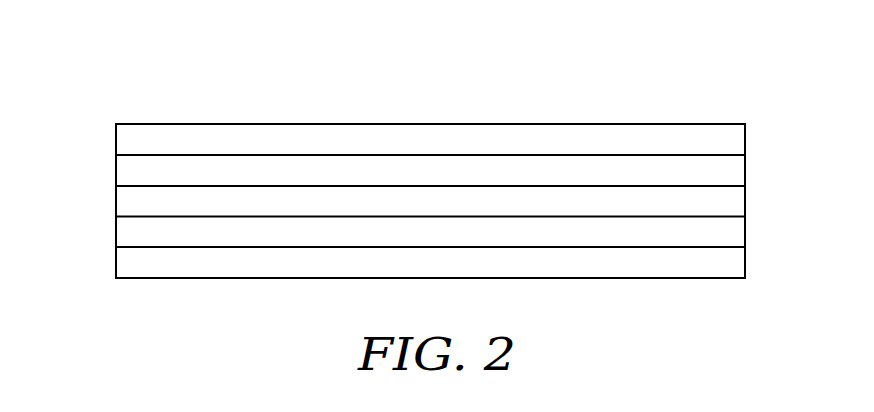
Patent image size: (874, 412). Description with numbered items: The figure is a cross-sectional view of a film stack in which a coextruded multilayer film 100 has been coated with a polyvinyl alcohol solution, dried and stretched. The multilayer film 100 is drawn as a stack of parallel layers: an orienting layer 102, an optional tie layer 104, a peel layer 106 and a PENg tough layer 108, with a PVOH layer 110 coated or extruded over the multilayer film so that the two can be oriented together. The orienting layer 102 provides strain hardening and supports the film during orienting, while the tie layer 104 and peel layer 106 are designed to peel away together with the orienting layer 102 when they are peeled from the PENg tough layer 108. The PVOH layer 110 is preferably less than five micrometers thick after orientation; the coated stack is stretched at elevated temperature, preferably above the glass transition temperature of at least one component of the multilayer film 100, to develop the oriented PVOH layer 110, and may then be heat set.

The multilayer film 100 is at (115, 58).
The orienting layer 102 is at (732, 136).
The tie layer 104 is at (732, 170).
The peel layer 106 is at (732, 200).
The PENg tough layer 108 is at (732, 232).
The PVOH layer 110 is at (732, 262).